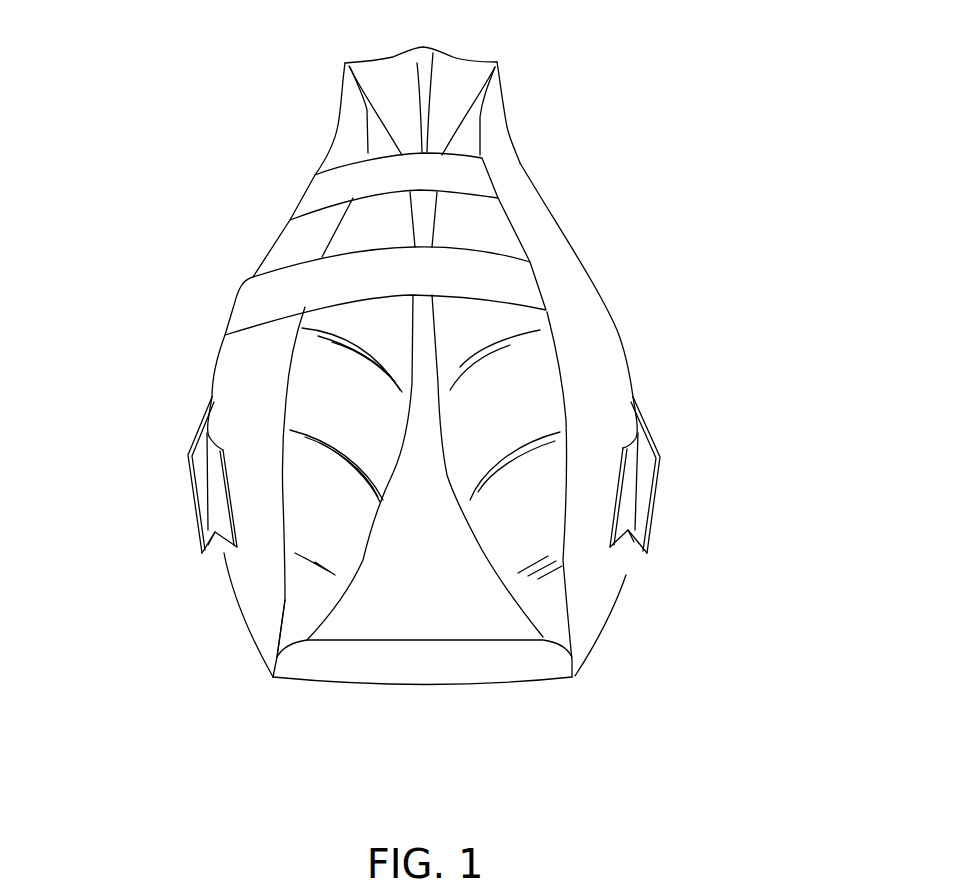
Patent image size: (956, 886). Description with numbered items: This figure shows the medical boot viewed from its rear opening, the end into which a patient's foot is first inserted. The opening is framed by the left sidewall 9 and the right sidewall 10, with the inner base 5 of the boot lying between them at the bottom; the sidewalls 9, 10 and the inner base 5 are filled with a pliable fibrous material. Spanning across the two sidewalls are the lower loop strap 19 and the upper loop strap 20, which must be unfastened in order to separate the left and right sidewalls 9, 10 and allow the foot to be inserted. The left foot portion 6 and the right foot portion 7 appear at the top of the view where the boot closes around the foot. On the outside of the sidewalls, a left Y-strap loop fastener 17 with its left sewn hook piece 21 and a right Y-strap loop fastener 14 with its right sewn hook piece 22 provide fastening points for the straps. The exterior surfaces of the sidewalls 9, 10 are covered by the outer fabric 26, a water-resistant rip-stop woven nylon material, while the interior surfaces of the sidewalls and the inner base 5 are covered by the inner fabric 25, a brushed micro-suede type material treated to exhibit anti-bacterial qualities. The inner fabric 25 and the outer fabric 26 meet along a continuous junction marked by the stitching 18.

The inner base 5 is at (435, 600).
The left foot portion 6 is at (390, 76).
The right foot portion 7 is at (460, 72).
The left sidewall 9 is at (313, 520).
The right sidewall 10 is at (540, 405).
The right Y-strap loop fastener 14 is at (655, 507).
The left Y-strap loop fastener 17 is at (188, 487).
The stitching 18 is at (283, 371).
The lower loop strap 19 is at (541, 288).
The upper loop strap 20 is at (495, 178).
The left sewn hook piece 21 is at (220, 523).
The right sewn hook piece 22 is at (623, 532).
The inner fabric 25 is at (608, 302).
The outer fabric 26 is at (310, 593).